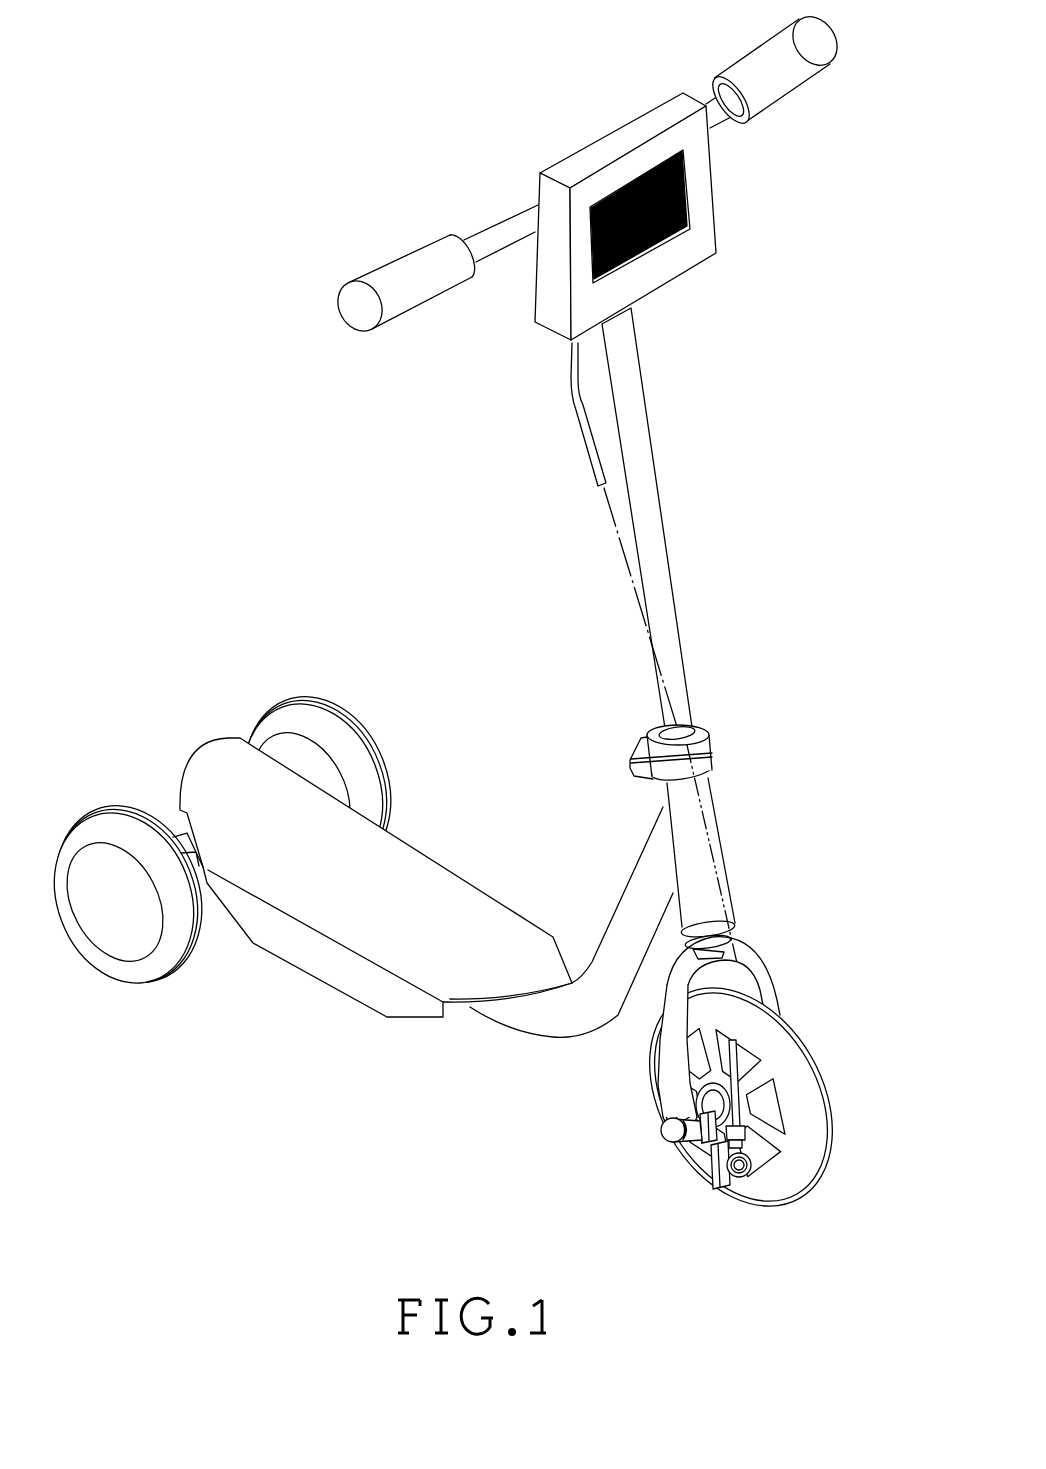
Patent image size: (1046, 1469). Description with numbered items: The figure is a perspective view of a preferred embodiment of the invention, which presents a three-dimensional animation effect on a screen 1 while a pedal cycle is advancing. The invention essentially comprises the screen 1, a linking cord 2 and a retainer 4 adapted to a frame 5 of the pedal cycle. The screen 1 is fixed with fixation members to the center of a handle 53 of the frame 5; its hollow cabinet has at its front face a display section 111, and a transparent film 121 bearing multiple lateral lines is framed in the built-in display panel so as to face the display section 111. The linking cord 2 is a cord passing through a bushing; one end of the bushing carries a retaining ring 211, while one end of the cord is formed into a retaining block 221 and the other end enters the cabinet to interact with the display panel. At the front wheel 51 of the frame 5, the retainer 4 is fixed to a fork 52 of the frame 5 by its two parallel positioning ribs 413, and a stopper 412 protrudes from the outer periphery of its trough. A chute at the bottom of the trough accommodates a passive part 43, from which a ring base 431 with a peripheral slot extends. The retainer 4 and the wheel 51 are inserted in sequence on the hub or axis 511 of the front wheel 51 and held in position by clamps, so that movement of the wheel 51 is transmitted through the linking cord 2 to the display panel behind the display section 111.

The screen 1 is at (689, 220).
The display section 111 is at (683, 187).
The transparent film 121 is at (688, 220).
The linking cord 2 is at (574, 393).
The retaining ring 211 is at (745, 1125).
The retaining block 221 is at (767, 1155).
The retainer 4 is at (629, 1145).
The stopper 412 is at (747, 1130).
The positioning ribs 413 is at (697, 1120).
The passive part 43 is at (713, 1157).
The ring base 431 is at (730, 1180).
The frame 5 is at (692, 813).
The wheel 51 is at (790, 1092).
The axis 511 is at (670, 1133).
The fork 52 is at (705, 1088).
The handle 53 is at (508, 230).